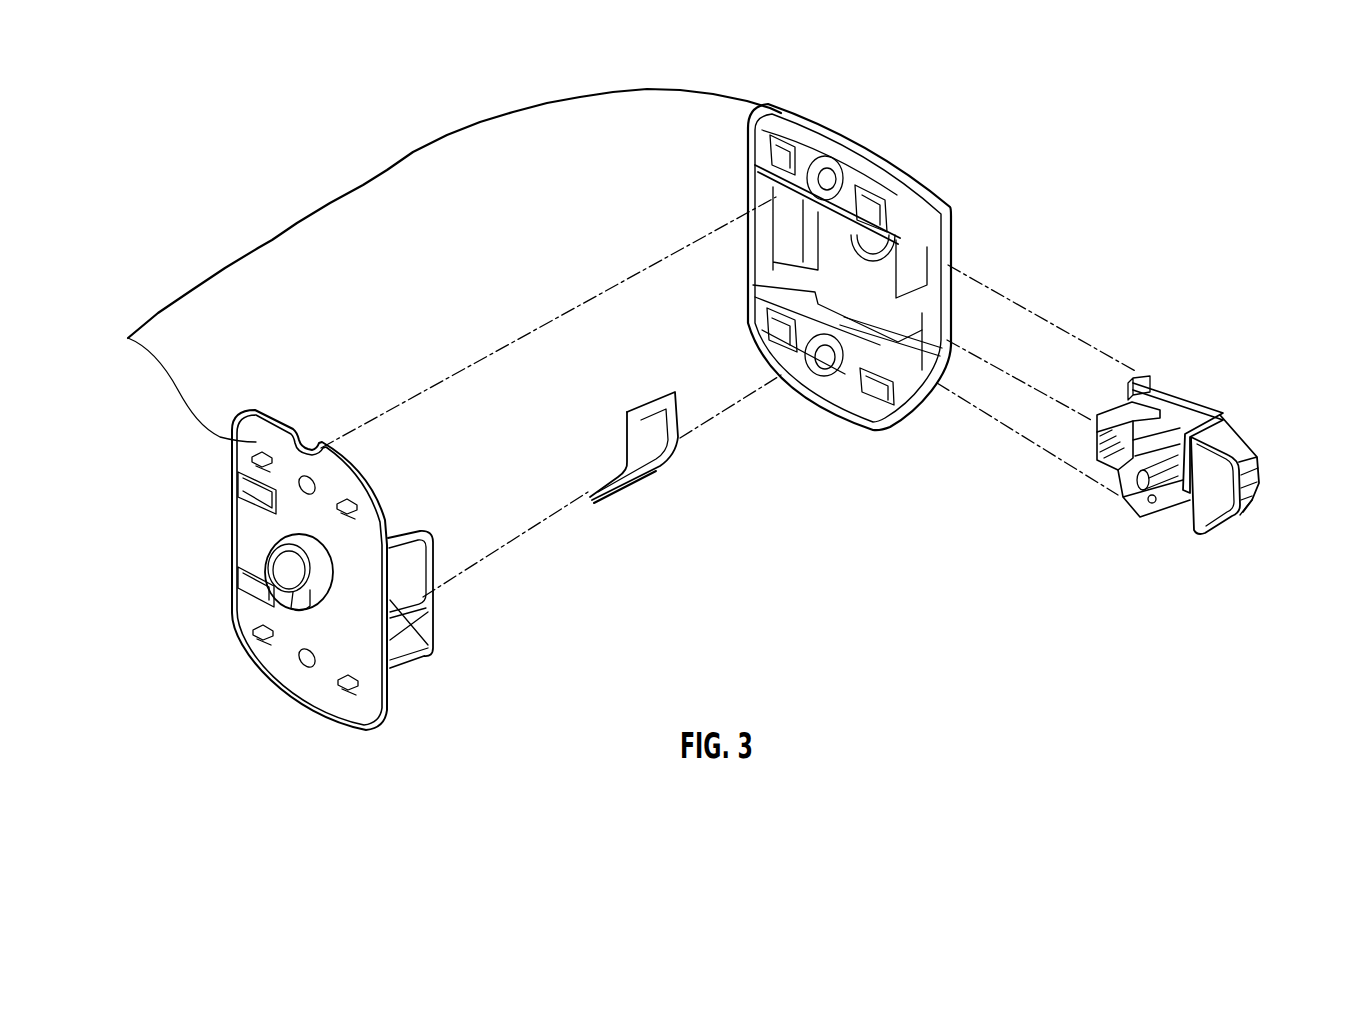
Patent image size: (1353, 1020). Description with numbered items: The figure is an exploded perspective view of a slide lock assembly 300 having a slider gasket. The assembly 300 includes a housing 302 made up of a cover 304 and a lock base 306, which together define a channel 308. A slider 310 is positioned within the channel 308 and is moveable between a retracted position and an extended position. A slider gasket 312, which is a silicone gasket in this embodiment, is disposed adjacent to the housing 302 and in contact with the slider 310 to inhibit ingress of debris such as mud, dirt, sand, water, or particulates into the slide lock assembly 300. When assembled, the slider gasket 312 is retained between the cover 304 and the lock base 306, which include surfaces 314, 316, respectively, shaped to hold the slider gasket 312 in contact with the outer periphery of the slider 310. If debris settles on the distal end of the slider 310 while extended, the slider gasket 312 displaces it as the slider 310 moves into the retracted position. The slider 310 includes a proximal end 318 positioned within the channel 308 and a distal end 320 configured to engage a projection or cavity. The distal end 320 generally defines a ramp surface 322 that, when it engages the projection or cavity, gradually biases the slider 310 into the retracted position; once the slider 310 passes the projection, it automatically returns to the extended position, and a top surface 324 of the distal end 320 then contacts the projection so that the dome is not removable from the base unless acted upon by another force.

The slide lock assembly 300 is at (941, 132).
The housing 302 is at (128, 338).
The cover 304 is at (339, 703).
The lock base 306 is at (917, 220).
The channel 308 is at (907, 273).
The slider 310 is at (1178, 412).
The slider gasket 312 is at (672, 455).
The surface 314 is at (420, 643).
The surface 316 is at (930, 363).
The proximal end 318 is at (1095, 425).
The distal end 320 is at (1262, 494).
The ramp surface 322 is at (1237, 521).
The top surface 324 is at (1230, 447).